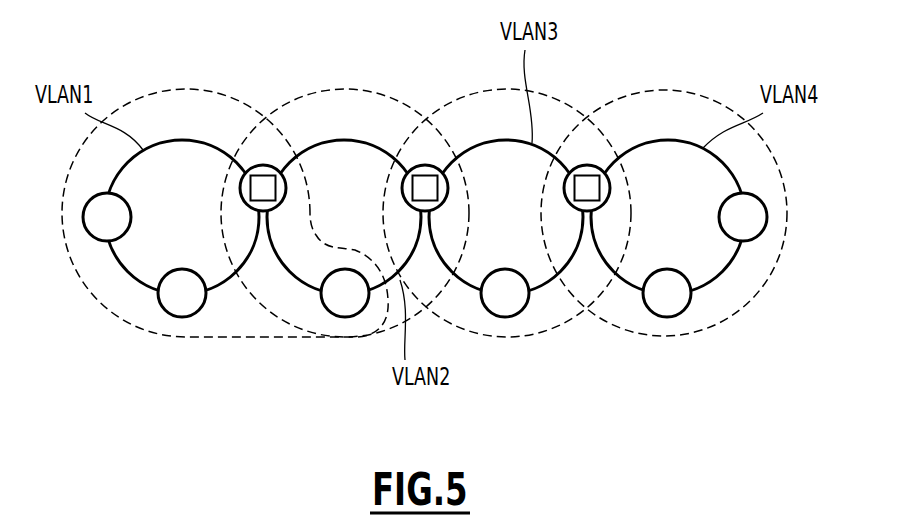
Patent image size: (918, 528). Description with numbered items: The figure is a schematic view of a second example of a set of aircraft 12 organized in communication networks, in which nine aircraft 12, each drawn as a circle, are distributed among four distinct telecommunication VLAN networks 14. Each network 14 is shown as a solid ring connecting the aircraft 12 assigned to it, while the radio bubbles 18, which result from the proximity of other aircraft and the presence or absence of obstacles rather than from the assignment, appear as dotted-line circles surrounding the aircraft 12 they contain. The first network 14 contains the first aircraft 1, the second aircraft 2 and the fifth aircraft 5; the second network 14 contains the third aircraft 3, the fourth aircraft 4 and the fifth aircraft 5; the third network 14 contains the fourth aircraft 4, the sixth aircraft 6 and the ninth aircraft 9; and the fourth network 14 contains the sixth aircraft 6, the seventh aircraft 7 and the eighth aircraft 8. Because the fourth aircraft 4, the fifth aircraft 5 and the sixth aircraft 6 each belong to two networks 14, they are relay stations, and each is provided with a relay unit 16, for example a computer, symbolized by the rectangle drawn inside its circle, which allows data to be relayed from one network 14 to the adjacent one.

The first aircraft 1 is at (88, 238).
The second aircraft 2 is at (164, 311).
The third aircraft 3 is at (329, 311).
The fourth aircraft 4 is at (403, 183).
The fifth aircraft 5 is at (241, 183).
The sixth aircraft 6 is at (568, 205).
The seventh aircraft 7 is at (760, 238).
The eighth aircraft 8 is at (681, 313).
The ninth aircraft 9 is at (500, 317).
The aircraft 12 is at (425, 220).
The telecommunications network 14 is at (175, 140).
The relay unit 16 is at (267, 183).
The radio bubble 18 is at (103, 283).